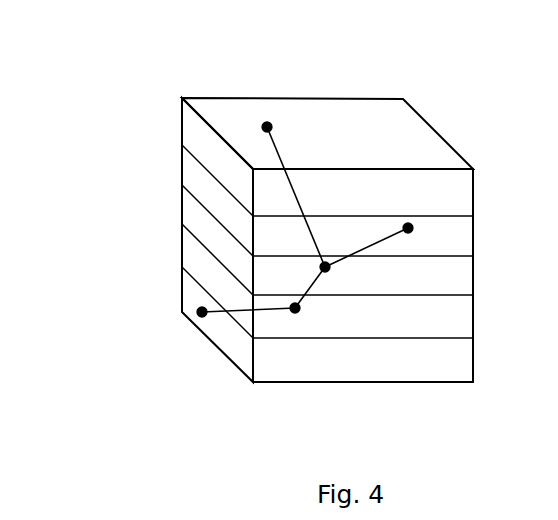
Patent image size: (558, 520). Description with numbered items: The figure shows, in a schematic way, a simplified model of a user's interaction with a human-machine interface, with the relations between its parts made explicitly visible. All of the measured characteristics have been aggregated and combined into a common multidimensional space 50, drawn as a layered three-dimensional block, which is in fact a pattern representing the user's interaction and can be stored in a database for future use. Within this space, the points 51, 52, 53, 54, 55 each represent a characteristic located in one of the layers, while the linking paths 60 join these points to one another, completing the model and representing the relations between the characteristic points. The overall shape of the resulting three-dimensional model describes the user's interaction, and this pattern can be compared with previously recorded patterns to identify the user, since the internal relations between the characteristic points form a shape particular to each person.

The common multidimensional space 50 is at (126, 186).
The characteristic point 51 is at (265, 116).
The characteristic point 52 is at (421, 227).
The characteristic point 53 is at (335, 269).
The characteristic point 54 is at (315, 308).
The characteristic point 55 is at (200, 318).
The linking paths 60 is at (300, 192).